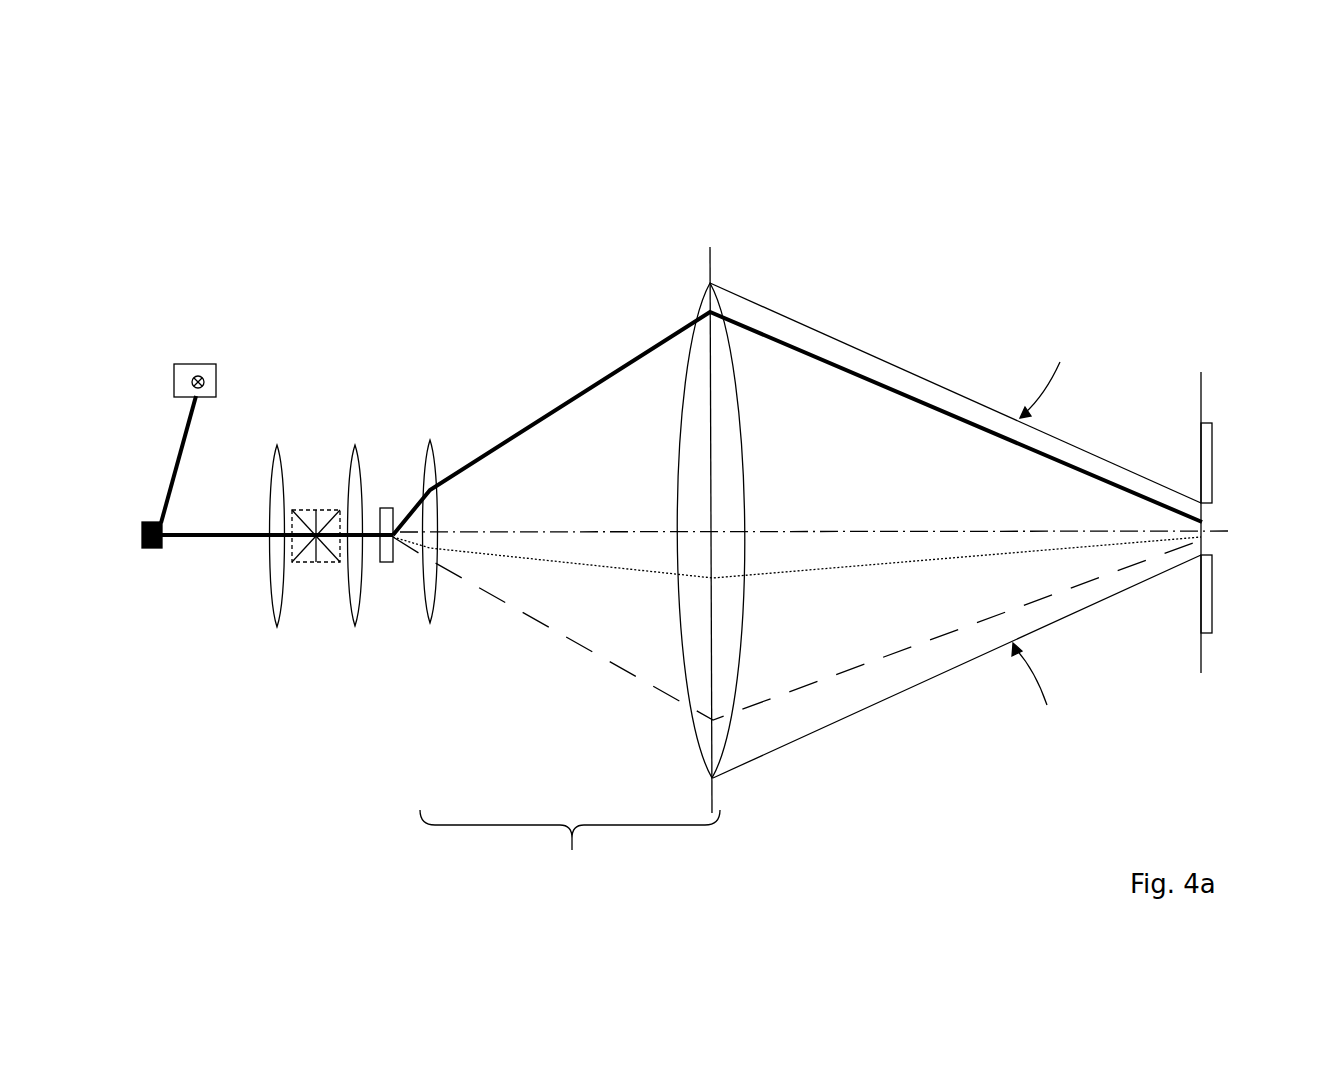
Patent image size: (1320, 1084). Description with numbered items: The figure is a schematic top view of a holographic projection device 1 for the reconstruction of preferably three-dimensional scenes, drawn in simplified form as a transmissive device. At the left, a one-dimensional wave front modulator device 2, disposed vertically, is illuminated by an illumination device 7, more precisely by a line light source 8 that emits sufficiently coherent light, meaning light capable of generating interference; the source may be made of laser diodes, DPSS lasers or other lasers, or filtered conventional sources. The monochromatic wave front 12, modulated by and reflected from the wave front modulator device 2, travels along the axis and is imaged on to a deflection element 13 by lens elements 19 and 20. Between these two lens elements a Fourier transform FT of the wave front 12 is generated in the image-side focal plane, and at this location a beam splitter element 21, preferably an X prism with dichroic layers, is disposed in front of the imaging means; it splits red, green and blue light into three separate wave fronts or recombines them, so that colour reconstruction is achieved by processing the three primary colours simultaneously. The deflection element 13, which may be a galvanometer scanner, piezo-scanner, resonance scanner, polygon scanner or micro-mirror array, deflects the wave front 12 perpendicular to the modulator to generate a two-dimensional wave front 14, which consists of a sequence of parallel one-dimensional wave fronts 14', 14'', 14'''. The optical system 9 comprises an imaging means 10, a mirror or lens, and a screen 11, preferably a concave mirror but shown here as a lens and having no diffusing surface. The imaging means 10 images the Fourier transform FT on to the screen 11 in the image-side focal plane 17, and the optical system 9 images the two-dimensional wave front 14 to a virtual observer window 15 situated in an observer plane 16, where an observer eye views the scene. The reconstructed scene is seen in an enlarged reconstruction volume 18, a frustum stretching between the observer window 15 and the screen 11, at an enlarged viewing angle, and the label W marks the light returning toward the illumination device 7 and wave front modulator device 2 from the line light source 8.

The holographic projection device 1 is at (301, 138).
The wave front modulator device 2 is at (140, 527).
The illumination device 7 is at (183, 368).
The line light source 8 is at (200, 380).
The optical system 9 is at (570, 853).
The imaging means 10 is at (430, 440).
The screen 11 is at (705, 298).
The wave front 12 is at (180, 537).
The deflection element 13 is at (383, 513).
The two-dimensional wave front 14 is at (791, 423).
The one-dimensional wave front 14' is at (870, 387).
The one-dimensional wave front 14'' is at (797, 646).
The one-dimensional wave front 14''' is at (797, 643).
The virtual observer window 15 is at (1210, 517).
The observer plane 16 is at (1203, 665).
The image-side focal plane 17 is at (715, 798).
The reconstruction volume 18 is at (857, 632).
The lens element 19 is at (277, 617).
The lens element 20 is at (357, 607).
The beam splitter element 21 is at (298, 510).
The return beam W is at (178, 457).
The Fourier transform FT is at (315, 557).